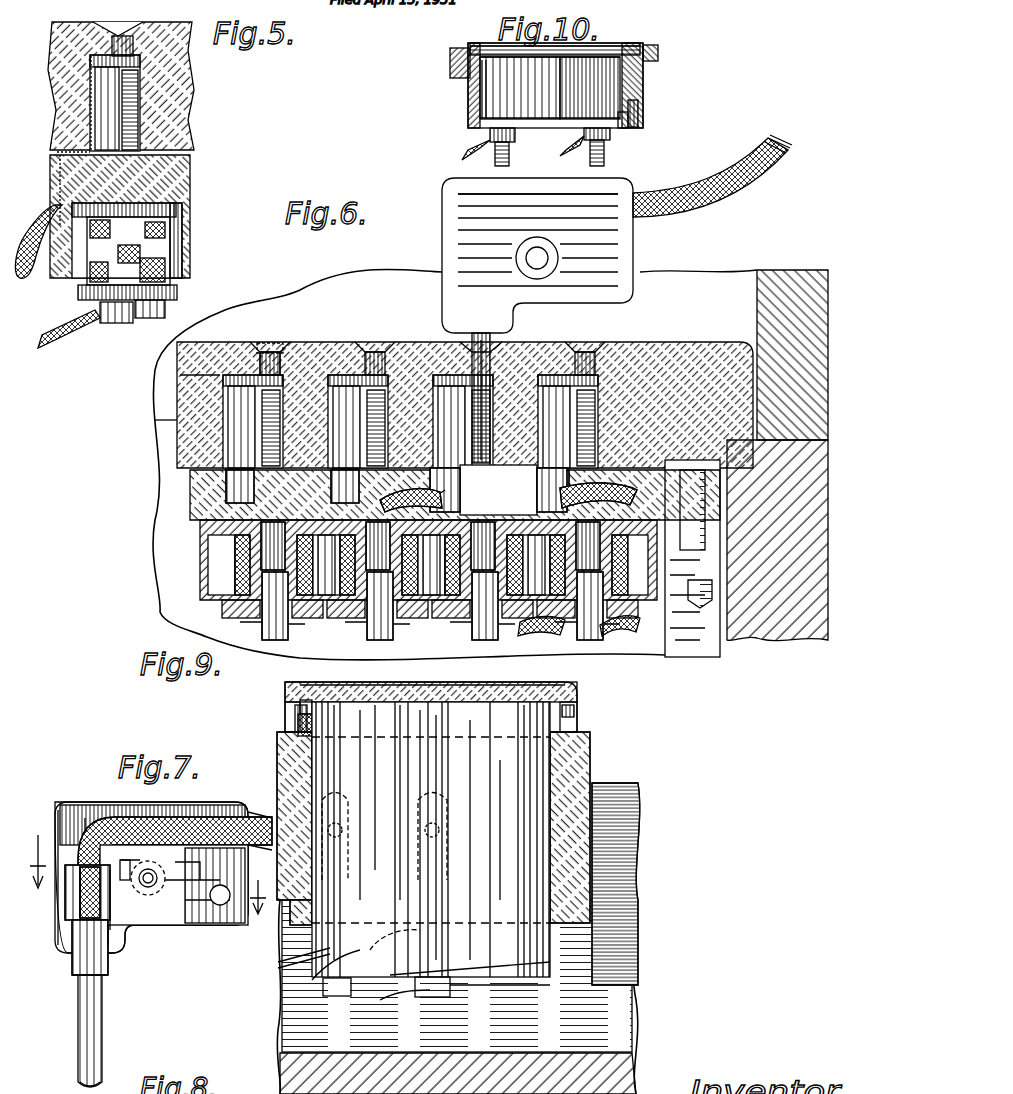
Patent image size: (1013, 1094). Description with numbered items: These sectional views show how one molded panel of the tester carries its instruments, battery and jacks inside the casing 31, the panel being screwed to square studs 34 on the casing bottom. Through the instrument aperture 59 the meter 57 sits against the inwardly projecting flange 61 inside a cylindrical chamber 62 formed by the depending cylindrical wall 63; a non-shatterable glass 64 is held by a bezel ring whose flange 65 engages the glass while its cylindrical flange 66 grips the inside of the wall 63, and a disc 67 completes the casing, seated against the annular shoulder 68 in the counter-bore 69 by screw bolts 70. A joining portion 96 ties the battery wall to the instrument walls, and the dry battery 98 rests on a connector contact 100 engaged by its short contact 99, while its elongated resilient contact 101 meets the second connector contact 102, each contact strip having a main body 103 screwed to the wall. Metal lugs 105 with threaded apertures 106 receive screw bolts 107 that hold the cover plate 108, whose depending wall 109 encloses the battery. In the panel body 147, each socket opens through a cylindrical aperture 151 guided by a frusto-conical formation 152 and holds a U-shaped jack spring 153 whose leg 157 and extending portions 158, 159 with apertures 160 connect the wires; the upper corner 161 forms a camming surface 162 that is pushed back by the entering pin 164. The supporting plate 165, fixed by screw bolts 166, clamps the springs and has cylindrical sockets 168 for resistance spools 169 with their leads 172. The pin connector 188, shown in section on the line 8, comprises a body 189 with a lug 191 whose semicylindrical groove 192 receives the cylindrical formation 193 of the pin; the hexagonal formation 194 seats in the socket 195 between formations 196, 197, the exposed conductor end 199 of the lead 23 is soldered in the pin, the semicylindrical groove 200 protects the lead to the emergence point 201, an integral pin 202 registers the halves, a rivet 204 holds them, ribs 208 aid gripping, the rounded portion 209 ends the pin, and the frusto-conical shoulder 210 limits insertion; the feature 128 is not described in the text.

In FIG. 7, the section line 8- 8 is at (148, 865).
In FIG. 6, the lead 23 is at (680, 205).
In FIG. 7, the lead 23 is at (182, 815).
In FIG. 9, the casing 31 is at (610, 1022).
In FIG. 6, the square stud 34 is at (705, 640).
In FIG. 10, the electrical instrument 57 is at (645, 78).
In FIG. 10, the circular aperture 59 is at (480, 96).
In FIG. 10, the flange 61 is at (468, 48).
In FIG. 10, the cylindrical chamber 62 is at (480, 79).
In FIG. 10, the cylindrical wall 63 is at (475, 108).
In FIG. 10, the non-shatterable glass 64 is at (600, 45).
In FIG. 10, the bezel flange 65 is at (490, 47).
In FIG. 10, the cylindrical flange 66 is at (642, 47).
In FIG. 10, the disc 67 is at (615, 130).
In FIG. 10, the annular shoulder 68 is at (470, 120).
In FIG. 10, the counter-bore 69 is at (637, 105).
In FIG. 10, the screw bolt 70 is at (638, 118).
In FIG. 9, the joining portion 96 is at (298, 790).
In FIG. 9, the dry battery 98 is at (525, 780).
In FIG. 9, the short contact 99 is at (372, 966).
In FIG. 9, the connector contact 100 is at (355, 998).
In FIG. 9, the elongated resilient contact 101 is at (470, 995).
In FIG. 9, the second connector contact 102 is at (436, 1000).
In FIG. 9, the main body 103 is at (450, 878).
In FIG. 9, the metal lug 105 is at (297, 725).
In FIG. 9, the threaded aperture 106 is at (298, 703).
In FIG. 9, the screw bolt 107 is at (318, 684).
In FIG. 9, the cover plate 108 is at (354, 684).
In FIG. 9, the depending wall 109 is at (572, 716).
In FIG. 7, the hole 128 is at (140, 866).
In FIG. 5, the body 147 is at (180, 140).
In FIG. 6, the body 147 is at (640, 342).
In FIG. 6, the cylindrical aperture 151 is at (290, 348).
In FIG. 6, the frusto-conical formation 152 is at (278, 345).
In FIG. 5, the jack spring 153 is at (127, 110).
In FIG. 6, the jack spring 153 is at (177, 428).
In FIG. 5, the leg 157 is at (98, 86).
In FIG. 5, the extending portion 158 is at (70, 142).
In FIG. 6, the extending portion 158 is at (437, 499).
In FIG. 5, the connector portion 159 is at (58, 182).
In FIG. 6, the connector portion 159 is at (462, 470).
In FIG. 5, the aperture 160 is at (60, 210).
In FIG. 6, the aperture 160 is at (508, 497).
In FIG. 5, the upper corner 161 is at (150, 70).
In FIG. 6, the upper corner 161 is at (406, 445).
In FIG. 6, the curved camming surface 162 is at (390, 360).
In FIG. 6, the pin 164 is at (512, 412).
In FIG. 7, the pin 164 is at (80, 1038).
In FIG. 5, the supporting plate 165 is at (190, 176).
In FIG. 6, the supporting plate 165 is at (192, 500).
In FIG. 6, the screw bolt 166 is at (738, 340).
In FIG. 5, the cylindrical socket 168 is at (176, 236).
In FIG. 5, the resistance spool 169 is at (160, 252).
In FIG. 6, the resistance spool 169 is at (230, 582).
In FIG. 6, the lead 172 is at (608, 628).
In FIG. 6, the pin connector 188 is at (470, 180).
In FIG. 7, the body 189 is at (72, 805).
In FIG. 6, the lug 191 is at (505, 318).
In FIG. 7, the lug 191 is at (115, 935).
In FIG. 7, the semicylindrical groove 192 is at (112, 948).
In FIG. 6, the cylindrical formation 193 is at (498, 340).
In FIG. 7, the cylindrical formation 193 is at (80, 960).
In FIG. 7, the hexagonal formation 194 is at (68, 905).
In FIG. 7, the socket 195 is at (150, 908).
In FIG. 7, the formation 196 is at (68, 820).
In FIG. 7, the formation 197 is at (72, 915).
In FIG. 7, the exposed conductor end 199 is at (92, 815).
In FIG. 7, the semicylindrical groove 200 is at (130, 815).
In FIG. 7, the emergence point 201 is at (240, 815).
In FIG. 7, the integral pin 202 is at (226, 905).
In FIG. 6, the rivet 204 is at (548, 260).
In FIG. 7, the rivet 204 is at (160, 876).
In FIG. 6, the rib 208 is at (590, 200).
In FIG. 7, the rounded portion 209 is at (102, 1085).
In FIG. 7, the frusto-conical shoulder 210 is at (105, 975).